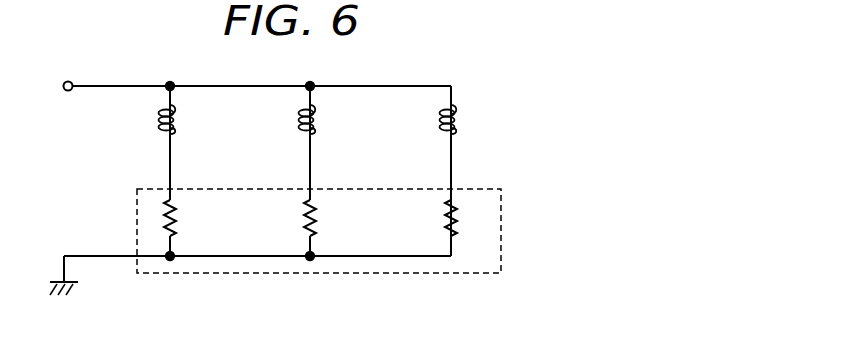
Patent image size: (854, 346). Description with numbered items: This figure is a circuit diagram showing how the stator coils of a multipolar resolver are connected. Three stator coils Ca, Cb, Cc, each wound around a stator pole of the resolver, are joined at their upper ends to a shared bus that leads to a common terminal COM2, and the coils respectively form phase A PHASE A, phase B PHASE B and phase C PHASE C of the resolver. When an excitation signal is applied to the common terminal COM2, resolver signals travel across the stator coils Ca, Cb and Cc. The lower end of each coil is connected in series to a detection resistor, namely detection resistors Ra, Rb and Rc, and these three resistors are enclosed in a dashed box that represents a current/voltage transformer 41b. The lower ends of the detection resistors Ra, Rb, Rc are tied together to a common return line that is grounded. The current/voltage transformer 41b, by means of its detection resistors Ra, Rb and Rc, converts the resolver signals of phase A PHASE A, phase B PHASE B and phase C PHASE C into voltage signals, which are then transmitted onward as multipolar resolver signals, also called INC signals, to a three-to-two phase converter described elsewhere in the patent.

The current/voltage transformer 41b is at (501, 214).
The common terminal COM2 is at (70, 73).
The stator coil Ca is at (183, 143).
The stator coil Cb is at (323, 143).
The stator coil Cc is at (464, 120).
The detection resistor Ra is at (185, 228).
The detection resistor Rb is at (325, 228).
The detection resistor Rc is at (466, 218).
The phase A PHASE A is at (152, 142).
The phase B PHASE B is at (295, 142).
The phase C PHASE C is at (434, 142).